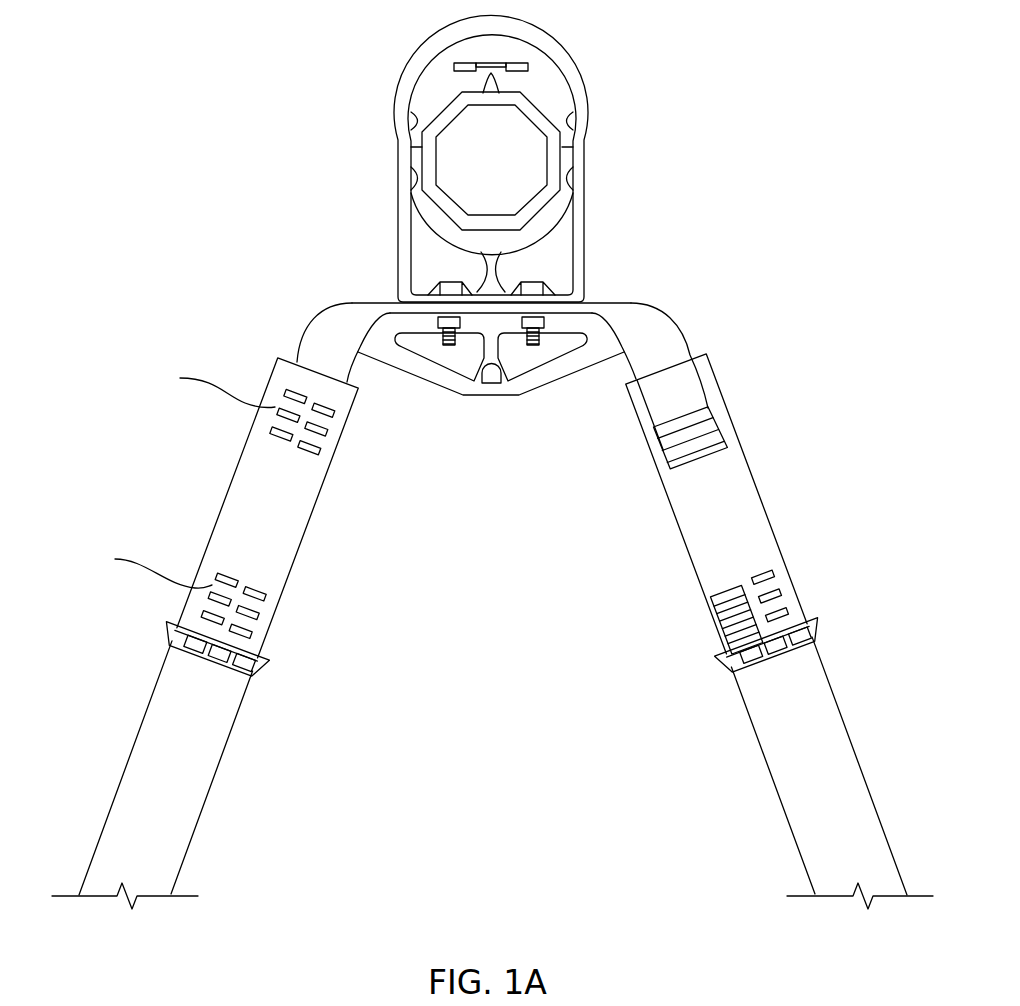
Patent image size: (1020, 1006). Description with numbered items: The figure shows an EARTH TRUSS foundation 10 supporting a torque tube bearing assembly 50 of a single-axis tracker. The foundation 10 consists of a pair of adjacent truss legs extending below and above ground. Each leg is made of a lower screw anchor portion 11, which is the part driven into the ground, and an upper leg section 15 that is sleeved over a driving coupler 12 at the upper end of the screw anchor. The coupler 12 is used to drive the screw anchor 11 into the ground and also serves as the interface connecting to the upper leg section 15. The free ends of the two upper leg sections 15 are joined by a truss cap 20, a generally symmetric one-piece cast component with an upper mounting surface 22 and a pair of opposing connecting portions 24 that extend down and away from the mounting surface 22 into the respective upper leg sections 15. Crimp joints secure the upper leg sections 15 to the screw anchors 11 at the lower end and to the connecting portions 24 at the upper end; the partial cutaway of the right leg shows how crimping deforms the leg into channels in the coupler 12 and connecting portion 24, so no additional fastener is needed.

The EARTH TRUSS foundation 10 is at (233, 54).
The torque tube bearing assembly 50 is at (611, 79).
The truss cap 20 is at (660, 306).
The upper mounting surface 22 is at (590, 311).
The connecting portion 24 is at (320, 352).
The upper leg section 15 is at (313, 514).
The driving coupler 12 is at (257, 660).
The lower screw anchor portion 11 is at (220, 767).